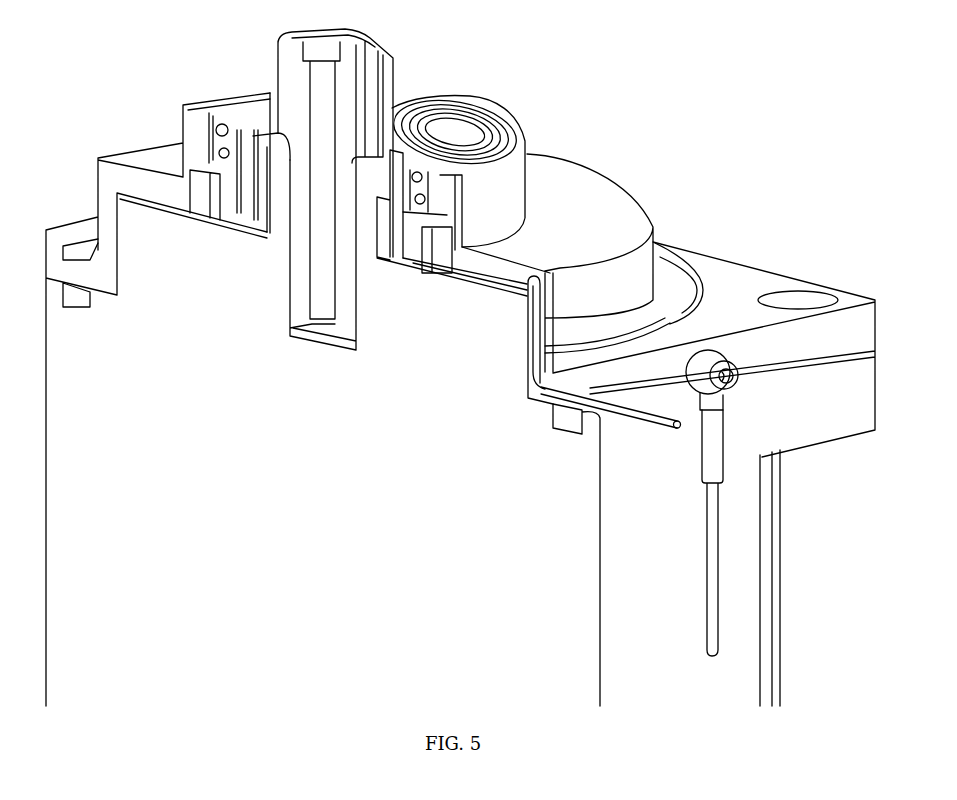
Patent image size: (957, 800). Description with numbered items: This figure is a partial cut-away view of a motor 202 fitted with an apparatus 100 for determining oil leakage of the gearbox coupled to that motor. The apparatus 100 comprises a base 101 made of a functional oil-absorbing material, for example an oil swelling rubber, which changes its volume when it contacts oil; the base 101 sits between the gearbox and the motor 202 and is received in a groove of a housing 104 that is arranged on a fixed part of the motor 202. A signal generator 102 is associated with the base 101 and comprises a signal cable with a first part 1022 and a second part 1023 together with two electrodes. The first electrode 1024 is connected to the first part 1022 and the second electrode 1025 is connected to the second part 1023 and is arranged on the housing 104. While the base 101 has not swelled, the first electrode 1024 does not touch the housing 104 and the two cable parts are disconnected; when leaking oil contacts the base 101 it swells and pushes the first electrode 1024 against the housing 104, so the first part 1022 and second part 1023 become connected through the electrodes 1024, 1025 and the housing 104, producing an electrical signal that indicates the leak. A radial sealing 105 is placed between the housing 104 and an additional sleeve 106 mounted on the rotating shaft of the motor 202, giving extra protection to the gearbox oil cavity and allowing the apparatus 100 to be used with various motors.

The apparatus 100 is at (460, 367).
The base 101 is at (436, 280).
The signal generator 102 is at (525, 296).
The housing 104 is at (623, 206).
The radial sealing 105 is at (470, 118).
The additional sleeve 106 is at (408, 126).
The first part 1022 is at (512, 284).
The second part 1023 is at (712, 503).
The first electrode 1024 is at (416, 268).
The second electrode 1025 is at (708, 345).
The motor 202 is at (749, 528).